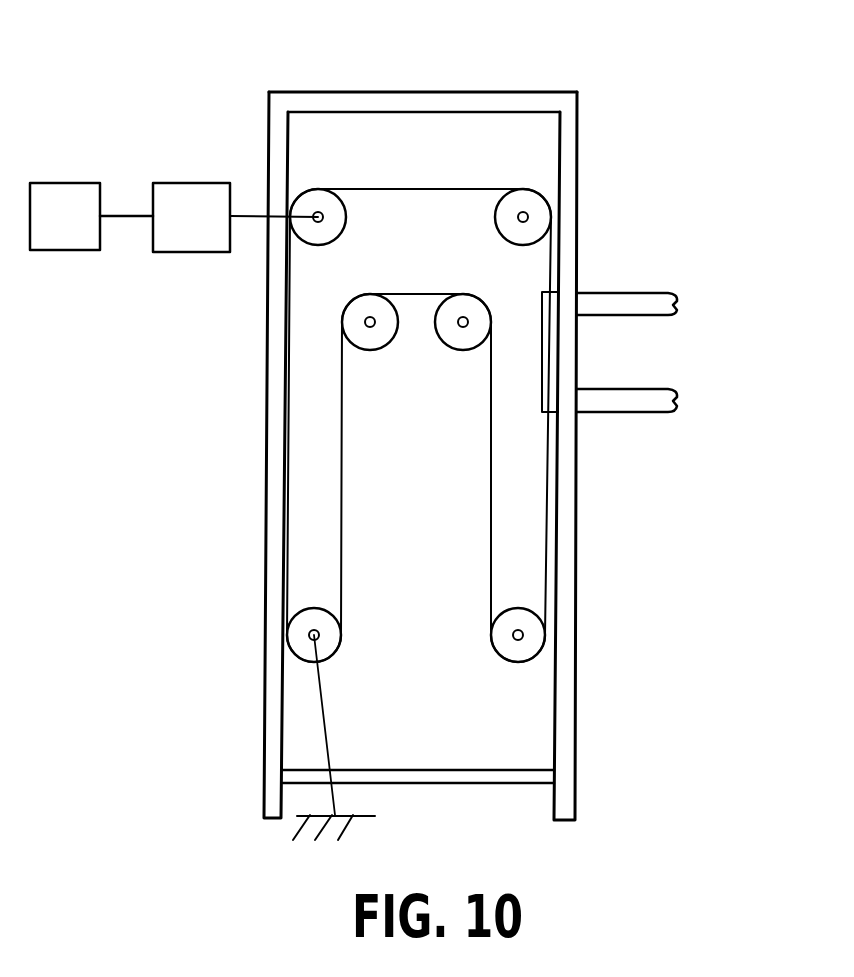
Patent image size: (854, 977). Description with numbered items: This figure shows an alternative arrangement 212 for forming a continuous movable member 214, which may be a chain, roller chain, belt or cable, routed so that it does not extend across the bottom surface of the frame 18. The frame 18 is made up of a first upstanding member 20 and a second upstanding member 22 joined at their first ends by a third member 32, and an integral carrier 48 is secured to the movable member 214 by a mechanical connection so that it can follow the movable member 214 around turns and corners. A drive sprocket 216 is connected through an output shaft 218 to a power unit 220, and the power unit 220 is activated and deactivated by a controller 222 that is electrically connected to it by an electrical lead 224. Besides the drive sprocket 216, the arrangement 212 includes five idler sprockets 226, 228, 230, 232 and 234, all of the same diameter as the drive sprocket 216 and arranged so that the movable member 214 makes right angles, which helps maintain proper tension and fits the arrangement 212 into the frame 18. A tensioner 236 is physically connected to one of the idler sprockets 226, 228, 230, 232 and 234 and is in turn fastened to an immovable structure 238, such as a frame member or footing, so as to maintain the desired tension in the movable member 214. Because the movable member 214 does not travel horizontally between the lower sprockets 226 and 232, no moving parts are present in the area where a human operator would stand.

The frame 18 is at (317, 82).
The first upstanding member 20 is at (267, 505).
The second upstanding member 22 is at (577, 533).
The third member 32 is at (458, 92).
The integral carrier 48 is at (668, 282).
The alternative arrangement 212 is at (678, 92).
The continuous movable member 214 is at (343, 510).
The drive sprocket 216 is at (348, 218).
The output shaft 218 is at (243, 213).
The power unit 220 is at (203, 253).
The controller 222 is at (78, 253).
The electrical lead 224 is at (118, 213).
The idler sprocket 226 is at (337, 657).
The idler sprocket 228 is at (367, 349).
The idler sprocket 230 is at (460, 351).
The idler sprocket 232 is at (527, 662).
The idler sprocket 234 is at (517, 244).
The tensioner 236 is at (327, 740).
The immovable structure 238 is at (370, 817).